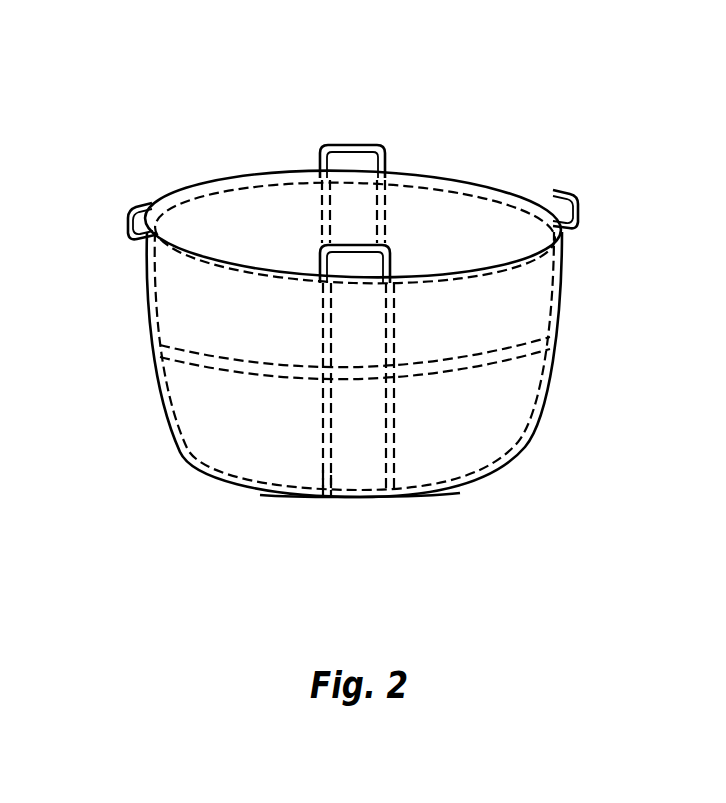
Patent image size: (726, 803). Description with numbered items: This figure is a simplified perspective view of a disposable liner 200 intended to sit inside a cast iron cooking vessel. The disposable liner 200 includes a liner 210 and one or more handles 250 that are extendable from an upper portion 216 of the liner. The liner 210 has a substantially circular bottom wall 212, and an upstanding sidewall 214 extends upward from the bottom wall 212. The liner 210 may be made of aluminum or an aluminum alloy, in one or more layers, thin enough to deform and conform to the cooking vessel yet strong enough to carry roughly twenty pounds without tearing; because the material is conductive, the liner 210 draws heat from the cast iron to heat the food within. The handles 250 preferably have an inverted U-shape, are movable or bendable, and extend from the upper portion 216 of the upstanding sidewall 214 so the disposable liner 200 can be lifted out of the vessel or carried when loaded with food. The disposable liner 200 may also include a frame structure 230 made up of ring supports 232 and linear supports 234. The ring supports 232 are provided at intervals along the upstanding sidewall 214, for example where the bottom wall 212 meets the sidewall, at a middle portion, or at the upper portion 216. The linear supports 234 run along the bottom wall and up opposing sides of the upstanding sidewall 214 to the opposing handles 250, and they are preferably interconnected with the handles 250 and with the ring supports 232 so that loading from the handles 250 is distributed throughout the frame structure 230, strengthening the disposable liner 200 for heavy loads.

The disposable liner 200 is at (573, 136).
The liner 210 is at (527, 398).
The bottom wall 212 is at (499, 476).
The upstanding sidewall 214 is at (561, 293).
The upper portion 216 is at (170, 194).
The frame structure 230 is at (398, 467).
The ring supports 232 is at (200, 366).
The linear supports 234 is at (322, 493).
The handles 250 is at (370, 143).